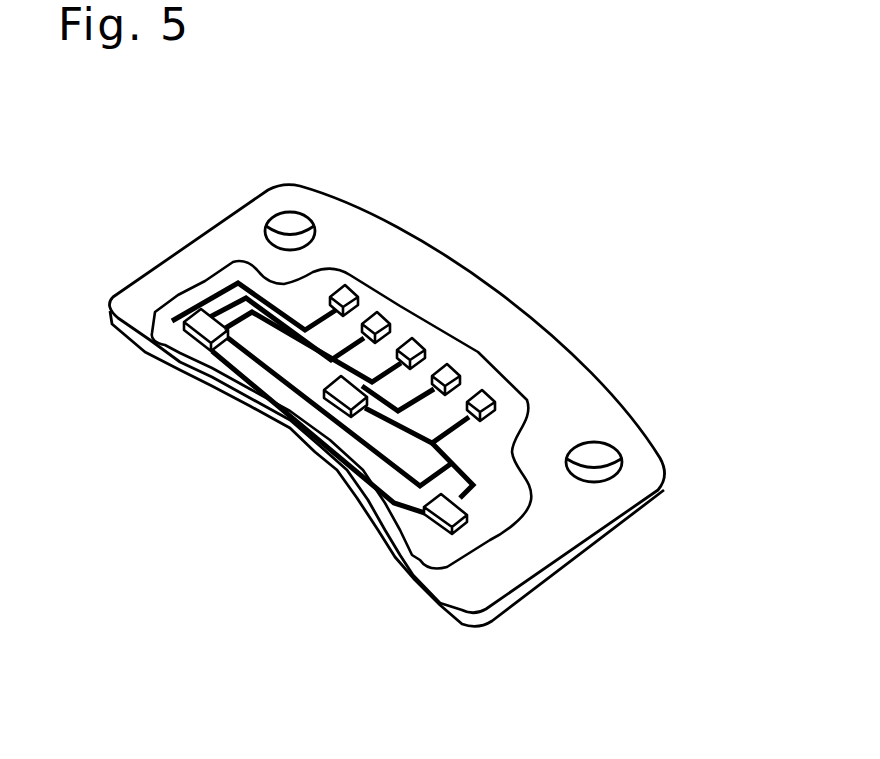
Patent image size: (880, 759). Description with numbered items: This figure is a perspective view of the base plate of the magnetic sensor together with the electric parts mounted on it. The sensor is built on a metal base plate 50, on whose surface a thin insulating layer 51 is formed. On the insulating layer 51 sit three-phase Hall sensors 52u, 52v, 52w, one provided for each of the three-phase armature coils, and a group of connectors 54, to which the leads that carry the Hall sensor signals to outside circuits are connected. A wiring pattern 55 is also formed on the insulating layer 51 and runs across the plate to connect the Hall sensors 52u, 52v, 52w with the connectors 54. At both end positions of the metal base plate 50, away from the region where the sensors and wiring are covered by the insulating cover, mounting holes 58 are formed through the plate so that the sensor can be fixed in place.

The metal base plate 50 is at (570, 510).
The thin insulating layer 51 is at (452, 546).
The Hall sensor 52u is at (203, 327).
The Hall sensor 52v is at (343, 392).
The Hall sensor 52w is at (445, 514).
The connectors 54 is at (347, 290).
The wiring pattern 55 is at (290, 317).
The mounting holes 58 is at (284, 222).